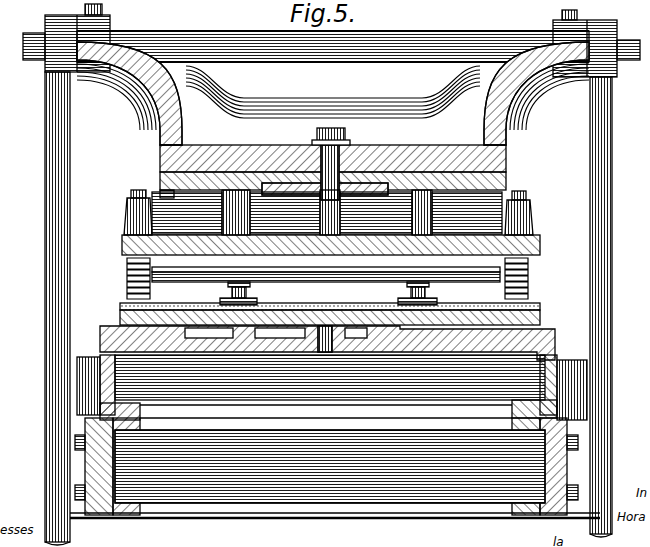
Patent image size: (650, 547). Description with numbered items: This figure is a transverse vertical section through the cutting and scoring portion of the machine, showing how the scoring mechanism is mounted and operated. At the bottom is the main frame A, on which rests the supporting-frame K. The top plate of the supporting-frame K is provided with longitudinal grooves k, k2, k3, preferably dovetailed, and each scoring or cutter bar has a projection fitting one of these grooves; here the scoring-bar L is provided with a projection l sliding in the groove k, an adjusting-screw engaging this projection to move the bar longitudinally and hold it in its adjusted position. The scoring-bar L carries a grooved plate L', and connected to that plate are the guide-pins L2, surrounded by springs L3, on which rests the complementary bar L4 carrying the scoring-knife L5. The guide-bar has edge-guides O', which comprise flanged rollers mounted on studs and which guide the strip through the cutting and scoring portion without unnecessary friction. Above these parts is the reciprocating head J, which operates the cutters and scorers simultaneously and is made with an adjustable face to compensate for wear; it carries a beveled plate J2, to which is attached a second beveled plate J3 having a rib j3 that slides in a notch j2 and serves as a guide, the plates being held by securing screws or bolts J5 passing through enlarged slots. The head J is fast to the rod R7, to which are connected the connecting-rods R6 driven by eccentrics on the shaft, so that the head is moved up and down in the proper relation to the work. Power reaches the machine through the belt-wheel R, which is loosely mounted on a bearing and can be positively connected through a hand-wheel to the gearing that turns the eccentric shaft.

The rod R7 is at (442, 32).
The connecting-rods R6 is at (46, 240).
The belt-wheel R is at (601, 233).
The reciprocating head J is at (333, 80).
The notch j2 is at (289, 170).
The beveled plate J2 is at (160, 172).
The second beveled plate J3 is at (160, 194).
The securing screws or bolts J5 is at (347, 139).
The rib j3 is at (367, 192).
The guide-pins L2 is at (527, 204).
The complementary bar L4 is at (540, 244).
The springs L3 is at (531, 275).
The scoring-knife L5 is at (366, 262).
The edge-guides O' is at (340, 294).
The plate L' is at (343, 298).
The scoring-bar L is at (343, 320).
The supporting-frame K is at (557, 352).
The longitudinal groove k3 is at (216, 339).
The longitudinal groove k2 is at (291, 339).
The projection l is at (358, 341).
The longitudinal groove k is at (388, 341).
The main frame A is at (312, 507).